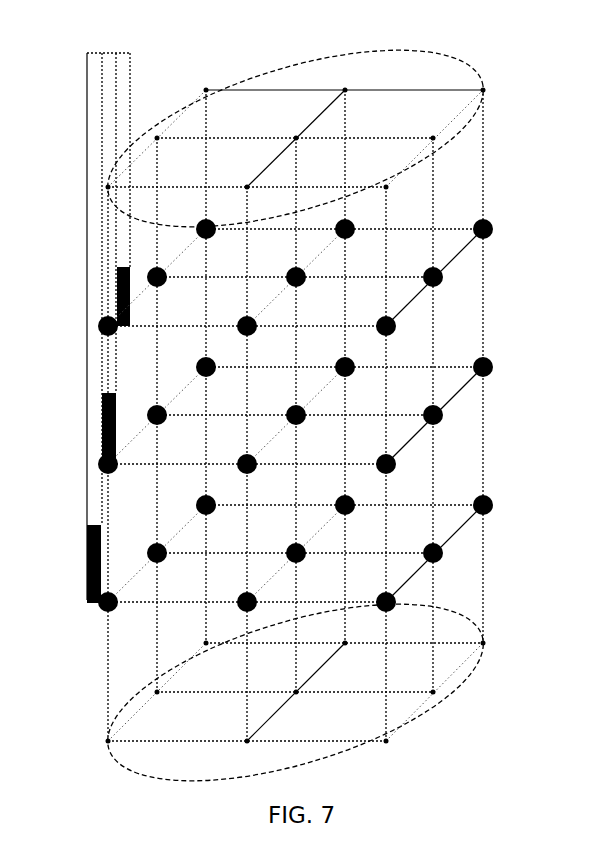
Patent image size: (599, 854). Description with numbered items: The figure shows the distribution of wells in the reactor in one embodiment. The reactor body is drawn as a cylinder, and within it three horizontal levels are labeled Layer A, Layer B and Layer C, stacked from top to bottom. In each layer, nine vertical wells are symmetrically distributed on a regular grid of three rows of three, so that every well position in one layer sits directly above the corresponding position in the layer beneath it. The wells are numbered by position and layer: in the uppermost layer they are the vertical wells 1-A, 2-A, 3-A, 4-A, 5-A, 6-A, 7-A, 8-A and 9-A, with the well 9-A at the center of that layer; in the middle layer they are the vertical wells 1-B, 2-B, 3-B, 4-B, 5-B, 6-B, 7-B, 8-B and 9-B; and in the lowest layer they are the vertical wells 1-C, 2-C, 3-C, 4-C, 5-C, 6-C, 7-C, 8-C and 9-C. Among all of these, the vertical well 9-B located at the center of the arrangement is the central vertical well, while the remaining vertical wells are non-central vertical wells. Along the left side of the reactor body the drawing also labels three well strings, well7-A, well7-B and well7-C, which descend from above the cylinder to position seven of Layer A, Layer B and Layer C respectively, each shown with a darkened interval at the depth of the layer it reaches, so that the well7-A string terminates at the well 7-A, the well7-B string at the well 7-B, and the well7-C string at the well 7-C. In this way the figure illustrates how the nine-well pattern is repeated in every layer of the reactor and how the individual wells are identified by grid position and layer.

The well completed at location 7 in layer A well7-A is at (213, 45).
The well completed at location 7 in layer B well7-B is at (158, 27).
The well completed at location 7 in layer C well7-C is at (90, 92).
The reservoir layer A Layer A is at (577, 257).
The reservoir layer B Layer B is at (577, 397).
The reservoir layer C Layer C is at (577, 534).
The vertical well 1-A is at (219, 221).
The vertical well 2-A is at (359, 221).
The vertical well 3-A is at (495, 217).
The vertical well 4-A is at (453, 276).
The vertical well 5-A is at (404, 325).
The vertical well 6-A is at (267, 320).
The vertical well 7-A is at (130, 320).
The vertical well 8-A is at (176, 268).
The vertical well 9-A is at (317, 268).
The vertical well 1-B is at (219, 358).
The vertical well 2-B is at (359, 359).
The vertical well 3-B is at (498, 359).
The vertical well 4-B is at (447, 408).
The vertical well 5-B is at (402, 454).
The vertical well 6-B is at (264, 457).
The vertical well 7-B is at (124, 458).
The vertical well 8-B is at (174, 410).
The central vertical well 9-B is at (313, 409).
The vertical well 1-C is at (220, 497).
The vertical well 2-C is at (359, 497).
The vertical well 3-C is at (501, 494).
The vertical well 4-C is at (453, 548).
The vertical well 5-C is at (404, 596).
The vertical well 6-C is at (268, 599).
The vertical well 7-C is at (130, 596).
The vertical well 8-C is at (175, 549).
The vertical well 9-C is at (313, 548).